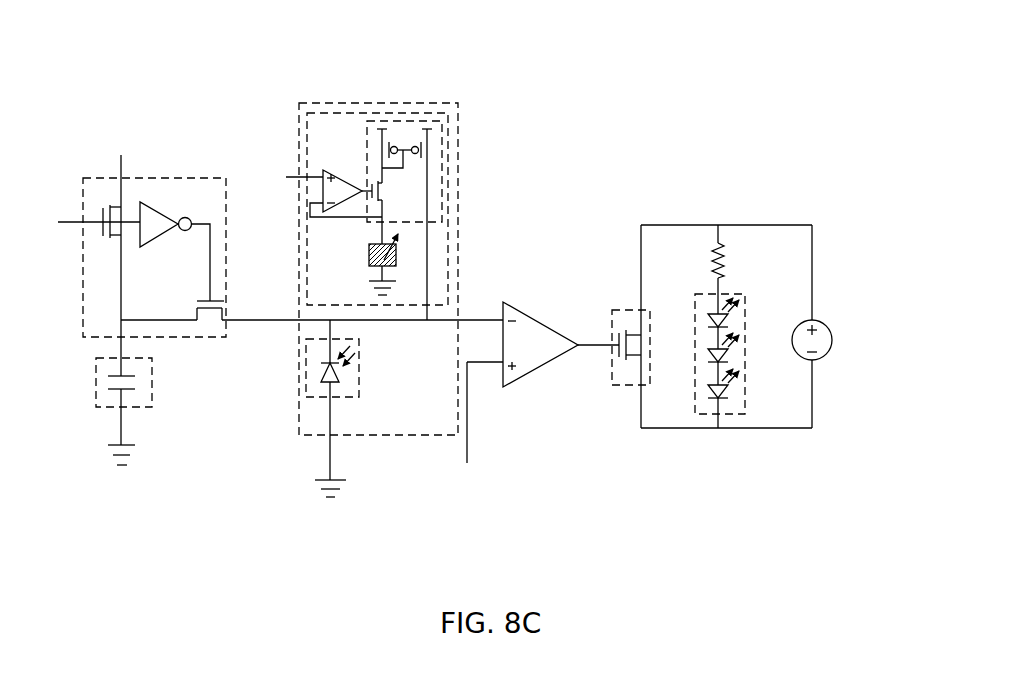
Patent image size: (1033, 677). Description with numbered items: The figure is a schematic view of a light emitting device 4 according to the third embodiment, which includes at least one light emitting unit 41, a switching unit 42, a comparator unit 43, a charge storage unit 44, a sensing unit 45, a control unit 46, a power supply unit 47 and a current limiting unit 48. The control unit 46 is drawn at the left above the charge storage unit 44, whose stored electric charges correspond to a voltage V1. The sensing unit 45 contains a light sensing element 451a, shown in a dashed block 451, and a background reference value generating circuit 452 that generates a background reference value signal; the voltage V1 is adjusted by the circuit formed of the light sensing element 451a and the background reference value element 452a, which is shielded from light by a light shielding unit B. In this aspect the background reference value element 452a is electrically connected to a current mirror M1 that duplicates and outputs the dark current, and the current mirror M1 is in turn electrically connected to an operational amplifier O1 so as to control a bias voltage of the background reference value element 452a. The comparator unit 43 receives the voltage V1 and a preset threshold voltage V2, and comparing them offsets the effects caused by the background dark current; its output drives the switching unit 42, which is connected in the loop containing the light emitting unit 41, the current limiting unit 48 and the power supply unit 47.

The light emitting device 4 is at (110, 29).
The control unit 46 is at (165, 178).
The charge storage unit 44 is at (95, 382).
The sensing unit 45 is at (451, 100).
The background reference value generating circuit 452 is at (363, 113).
The current mirror M1 is at (445, 133).
The operational amplifier O1 is at (341, 178).
The background reference value element 452a is at (370, 247).
The light shielding unit B is at (397, 253).
The photo sensor unit 451 is at (329, 408).
The light sensing element 451a is at (321, 368).
The voltage V1 is at (483, 308).
The threshold voltage V2 is at (485, 401).
The comparator unit 43 is at (538, 320).
The switching unit 42 is at (612, 362).
The light emitting unit 41 is at (745, 331).
The current limiting unit 48 is at (728, 262).
The power supply unit 47 is at (832, 340).